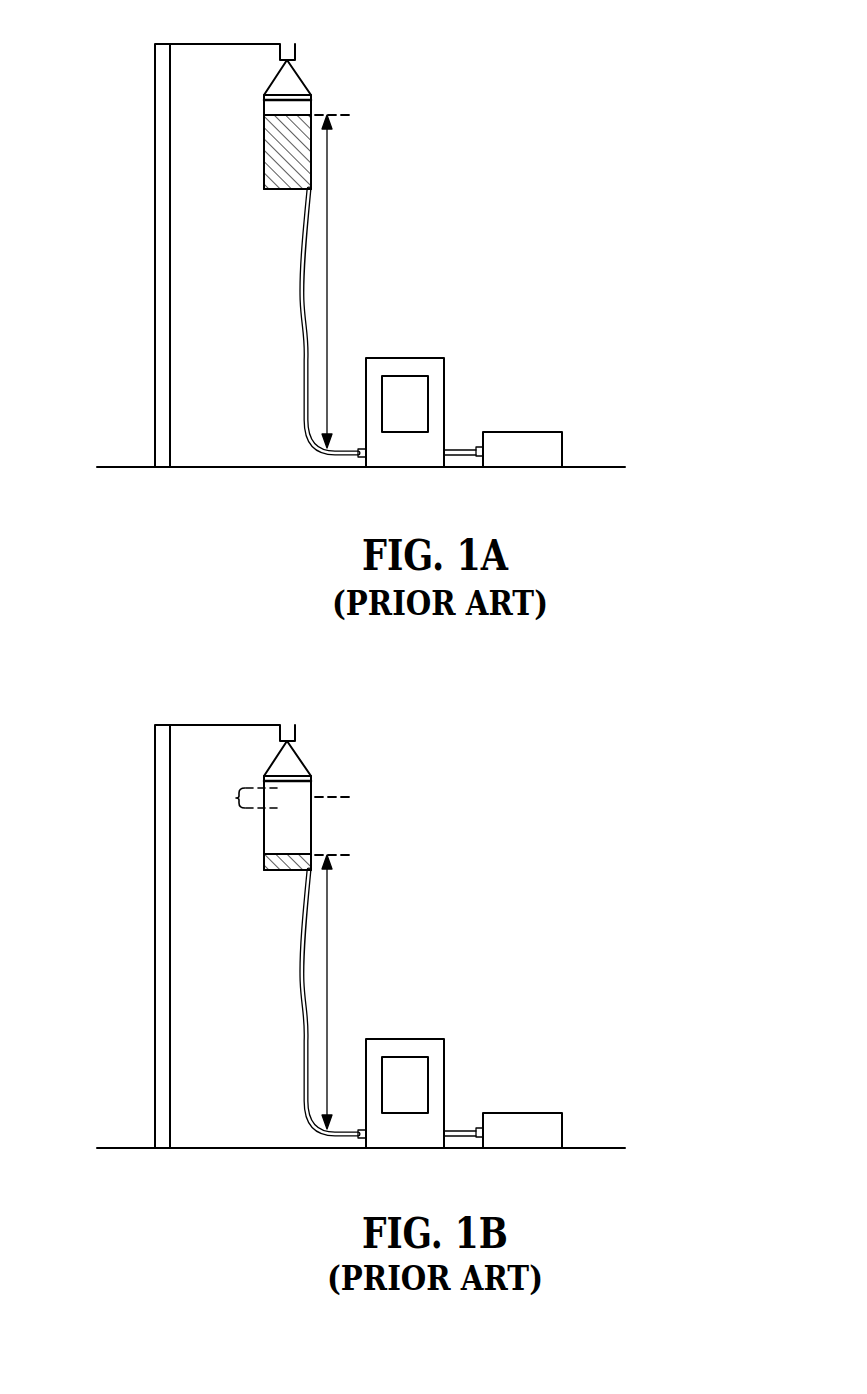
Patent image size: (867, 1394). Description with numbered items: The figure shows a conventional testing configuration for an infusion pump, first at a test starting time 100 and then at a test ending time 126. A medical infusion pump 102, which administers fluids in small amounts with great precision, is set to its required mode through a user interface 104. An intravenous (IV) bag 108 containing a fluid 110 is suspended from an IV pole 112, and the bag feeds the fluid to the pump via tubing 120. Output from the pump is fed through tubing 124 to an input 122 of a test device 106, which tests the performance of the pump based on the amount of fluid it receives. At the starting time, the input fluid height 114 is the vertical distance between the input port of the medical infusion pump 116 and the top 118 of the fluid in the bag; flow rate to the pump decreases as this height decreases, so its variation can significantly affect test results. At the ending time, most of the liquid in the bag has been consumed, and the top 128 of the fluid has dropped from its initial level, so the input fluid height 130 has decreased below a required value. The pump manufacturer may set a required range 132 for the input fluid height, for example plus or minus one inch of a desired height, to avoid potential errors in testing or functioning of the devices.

In FIG. 1A, the test starting time 100 is at (708, 91).
In FIG. 1A, the medical infusion pump 102 is at (405, 358).
In FIG. 1B, the medical infusion pump 102 is at (405, 1069).
In FIG. 1A, the user interface 104 is at (405, 432).
In FIG. 1A, the test device 106 is at (522, 432).
In FIG. 1B, the test device 106 is at (531, 1106).
In FIG. 1A, the intravenous (IV) bag 108 is at (313, 107).
In FIG. 1B, the intravenous (IV) bag 108 is at (323, 794).
In FIG. 1A, the fluid 110 is at (280, 172).
In FIG. 1B, the fluid 110 is at (254, 863).
In FIG. 1A, the IV pole 112 is at (155, 142).
In FIG. 1A, the input fluid height 114 is at (327, 268).
In FIG. 1A, the input port of the medical infusion pump 116 is at (355, 461).
In FIG. 1A, the top of the fluid 118 is at (345, 113).
In FIG. 1B, the top of the fluid 118 is at (370, 776).
In FIG. 1A, the tubing 120 is at (300, 332).
In FIG. 1A, the input of the test device 122 is at (477, 458).
In FIG. 1A, the tubing 124 is at (465, 448).
In FIG. 1B, the test ending time 126 is at (734, 745).
In FIG. 1B, the top of the fluid 128 is at (370, 833).
In FIG. 1B, the input fluid height 130 is at (369, 992).
In FIG. 1B, the required range 132 is at (233, 801).